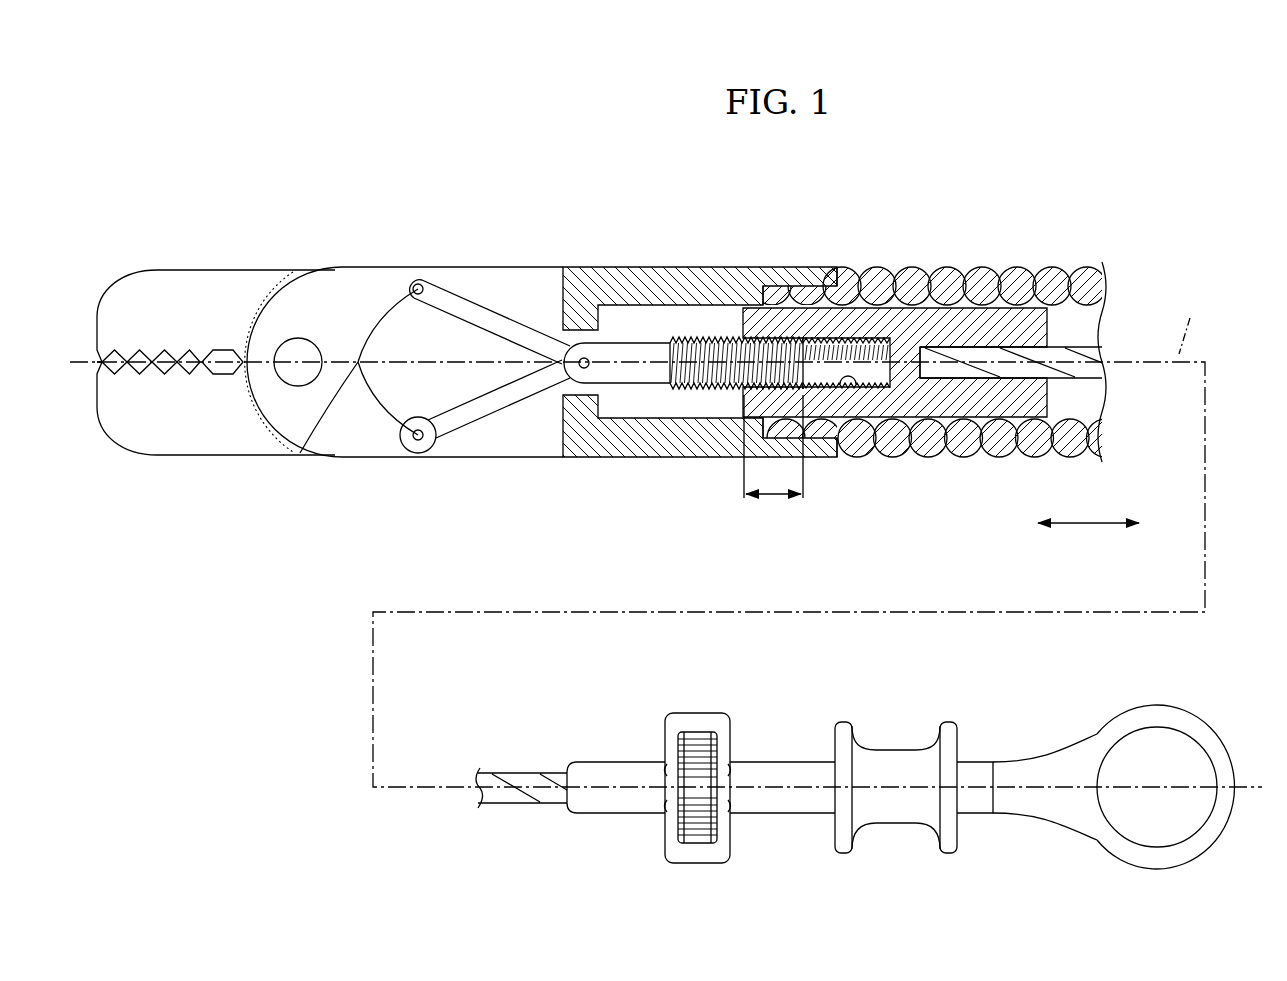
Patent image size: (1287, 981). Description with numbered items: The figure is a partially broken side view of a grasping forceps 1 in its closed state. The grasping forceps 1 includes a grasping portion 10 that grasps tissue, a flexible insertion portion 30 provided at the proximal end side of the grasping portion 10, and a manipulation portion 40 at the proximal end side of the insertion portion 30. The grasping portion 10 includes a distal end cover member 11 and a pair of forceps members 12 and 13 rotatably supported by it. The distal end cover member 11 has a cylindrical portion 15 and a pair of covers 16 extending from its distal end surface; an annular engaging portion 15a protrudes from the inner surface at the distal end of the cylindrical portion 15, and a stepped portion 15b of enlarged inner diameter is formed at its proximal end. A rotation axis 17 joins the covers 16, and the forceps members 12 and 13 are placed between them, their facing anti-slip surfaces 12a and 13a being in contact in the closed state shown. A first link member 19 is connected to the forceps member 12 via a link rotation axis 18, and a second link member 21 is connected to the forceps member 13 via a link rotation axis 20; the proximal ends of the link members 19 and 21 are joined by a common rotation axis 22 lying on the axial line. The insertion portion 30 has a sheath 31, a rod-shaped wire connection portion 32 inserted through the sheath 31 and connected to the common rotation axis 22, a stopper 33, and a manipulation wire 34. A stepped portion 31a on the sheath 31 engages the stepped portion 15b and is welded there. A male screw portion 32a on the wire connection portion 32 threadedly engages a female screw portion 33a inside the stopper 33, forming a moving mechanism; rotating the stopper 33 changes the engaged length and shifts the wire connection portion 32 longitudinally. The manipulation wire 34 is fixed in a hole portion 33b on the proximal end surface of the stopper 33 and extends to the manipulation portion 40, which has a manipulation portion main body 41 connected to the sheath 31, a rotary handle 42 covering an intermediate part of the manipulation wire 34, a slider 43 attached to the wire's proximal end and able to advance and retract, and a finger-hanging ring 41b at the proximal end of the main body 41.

The grasping forceps 1 is at (122, 202).
The grasping portion 10 is at (299, 240).
The distal end cover member 11 is at (517, 213).
The forceps member 12 is at (158, 282).
The anti-slip surface 12a is at (197, 354).
The forceps member 13 is at (157, 442).
The anti-slip surface 13a is at (197, 372).
The cylindrical portion 15 is at (629, 268).
The engaging portion 15a is at (566, 410).
The stepped portion 15b is at (802, 280).
The cover 16 is at (524, 282).
The rotation axis 17 is at (301, 387).
The link rotation axis 18 is at (418, 441).
The first link member 19 is at (487, 410).
The link rotation axis 20 is at (418, 283).
The second link member 21 is at (466, 300).
The common rotation axis 22 is at (592, 370).
The insertion portion 30 is at (1001, 258).
The sheath 31 is at (935, 268).
The stepped portion 31a is at (806, 290).
The wire connection portion 32 is at (650, 335).
The male screw portion 32a is at (712, 340).
The stopper 33 is at (927, 400).
The female screw portion 33a is at (847, 380).
The hole portion 33b is at (1000, 370).
The manipulation wire 34 is at (1064, 346).
The manipulation portion 40 is at (1172, 692).
The manipulation portion main body 41 is at (803, 772).
The finger-hanging ring 41b is at (1216, 745).
The rotary handle 42 is at (712, 747).
The slider 43 is at (890, 752).